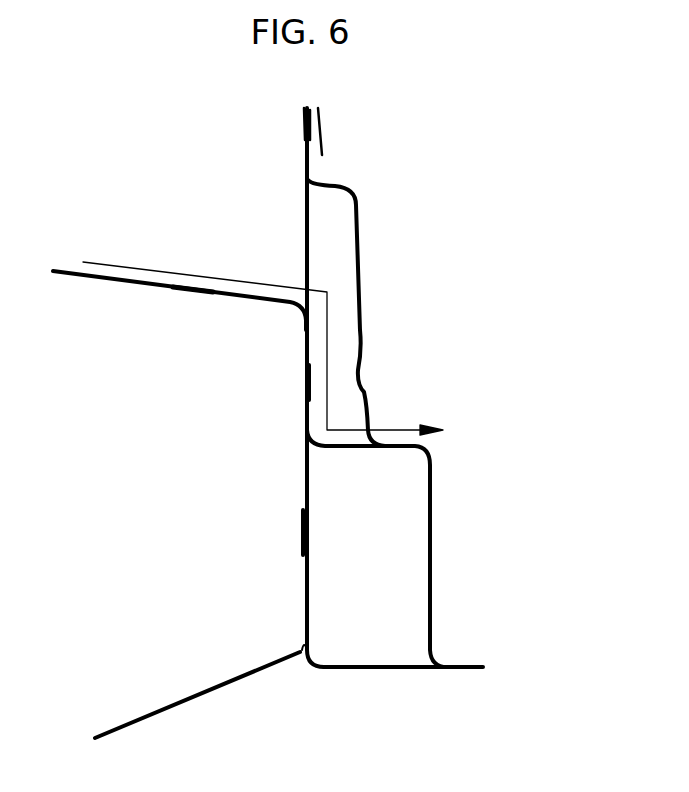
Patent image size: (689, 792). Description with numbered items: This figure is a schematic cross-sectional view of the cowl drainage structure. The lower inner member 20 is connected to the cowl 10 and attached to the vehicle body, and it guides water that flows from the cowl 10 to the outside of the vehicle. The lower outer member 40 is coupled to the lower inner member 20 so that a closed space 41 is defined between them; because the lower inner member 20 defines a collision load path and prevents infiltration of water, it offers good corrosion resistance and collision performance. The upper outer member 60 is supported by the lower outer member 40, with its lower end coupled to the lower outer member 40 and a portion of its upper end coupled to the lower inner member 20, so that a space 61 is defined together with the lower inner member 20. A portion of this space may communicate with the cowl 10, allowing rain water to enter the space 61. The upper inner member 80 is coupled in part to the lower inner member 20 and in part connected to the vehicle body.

The cowl 10 is at (105, 280).
The lower inner member 20 is at (236, 300).
The lower outer member 40 is at (432, 515).
The closed space 41 is at (367, 572).
The upper outer member 60 is at (362, 303).
The space 61 is at (333, 236).
The upper inner member 80 is at (306, 238).